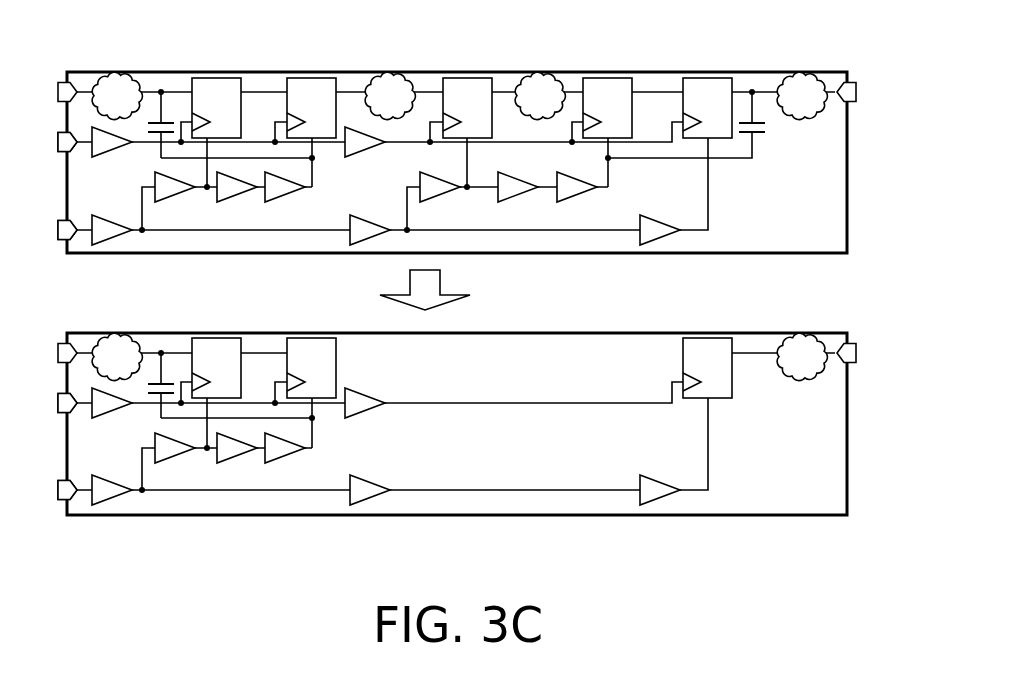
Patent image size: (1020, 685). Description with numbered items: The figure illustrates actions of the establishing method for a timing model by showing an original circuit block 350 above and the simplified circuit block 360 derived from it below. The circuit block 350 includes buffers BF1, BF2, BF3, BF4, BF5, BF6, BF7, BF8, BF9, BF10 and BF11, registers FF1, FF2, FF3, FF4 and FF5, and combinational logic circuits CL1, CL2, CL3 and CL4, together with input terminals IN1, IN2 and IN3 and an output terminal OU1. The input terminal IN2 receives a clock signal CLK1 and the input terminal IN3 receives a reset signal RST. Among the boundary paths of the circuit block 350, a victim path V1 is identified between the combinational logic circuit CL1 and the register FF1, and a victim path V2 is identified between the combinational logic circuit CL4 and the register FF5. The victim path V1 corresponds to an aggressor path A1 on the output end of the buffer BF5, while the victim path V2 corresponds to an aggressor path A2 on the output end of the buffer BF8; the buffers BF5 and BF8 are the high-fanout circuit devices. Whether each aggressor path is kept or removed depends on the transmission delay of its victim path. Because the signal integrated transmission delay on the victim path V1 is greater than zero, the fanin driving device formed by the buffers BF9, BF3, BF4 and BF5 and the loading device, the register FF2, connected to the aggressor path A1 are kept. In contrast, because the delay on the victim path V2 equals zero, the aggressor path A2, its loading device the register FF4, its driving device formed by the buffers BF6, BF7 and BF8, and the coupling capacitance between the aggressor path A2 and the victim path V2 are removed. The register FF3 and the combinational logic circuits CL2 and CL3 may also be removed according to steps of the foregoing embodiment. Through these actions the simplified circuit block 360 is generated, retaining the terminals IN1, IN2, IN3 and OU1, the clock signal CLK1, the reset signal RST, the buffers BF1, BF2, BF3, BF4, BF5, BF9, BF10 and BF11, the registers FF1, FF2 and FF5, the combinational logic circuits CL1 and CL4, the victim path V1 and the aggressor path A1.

The circuit block 350 is at (847, 185).
The simplified circuit block 360 is at (847, 443).
The input terminal IN1 is at (64, 83).
The input terminal IN2 is at (61, 132).
The input terminal IN3 is at (62, 242).
The clock signal CLK1 is at (44, 272).
The reset signal RST is at (49, 361).
The output terminal OU1 is at (860, 88).
The combinational logic circuit CL1 is at (120, 86).
The combinational logic circuit CL2 is at (390, 86).
The combinational logic circuit CL3 is at (540, 86).
The combinational logic circuit CL4 is at (802, 86).
The register FF1 is at (218, 85).
The register FF2 is at (311, 85).
The register FF3 is at (474, 85).
The register FF4 is at (611, 85).
The register FF5 is at (705, 85).
The buffer BF1 is at (112, 285).
The buffer BF2 is at (373, 272).
The buffer BF3 is at (178, 330).
The buffer BF4 is at (238, 330).
The buffer BF5 is at (286, 330).
The buffer BF6 is at (445, 199).
The buffer BF7 is at (521, 199).
The buffer BF8 is at (580, 199).
The buffer BF9 is at (123, 532).
The buffer BF10 is at (375, 245).
The buffer BF11 is at (657, 245).
The victim path V1 is at (170, 215).
The victim path V2 is at (763, 86).
The aggressor path A1 is at (323, 303).
The aggressor path A2 is at (595, 168).